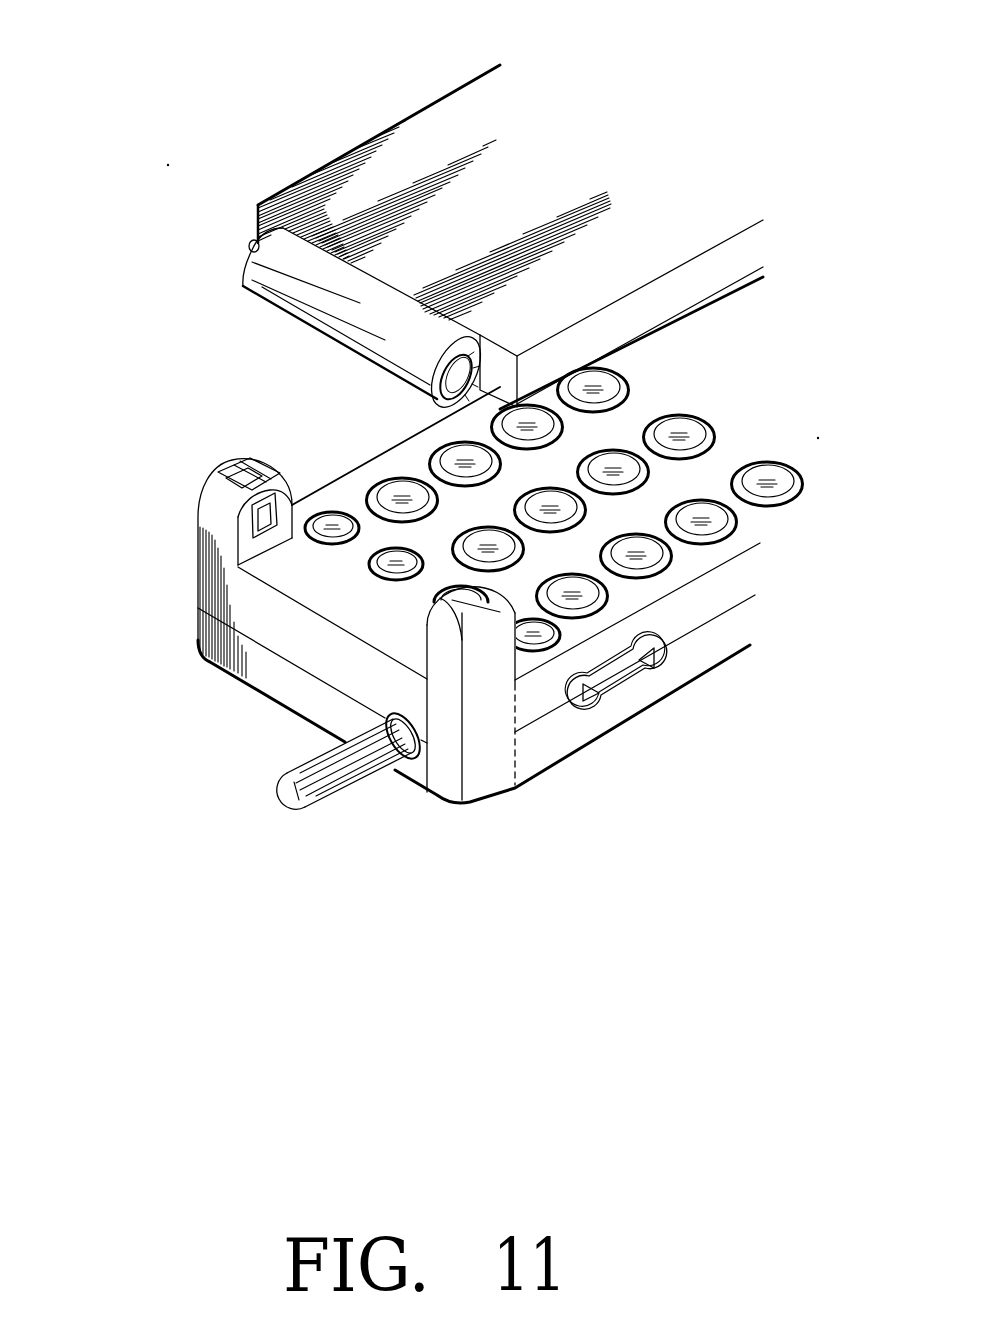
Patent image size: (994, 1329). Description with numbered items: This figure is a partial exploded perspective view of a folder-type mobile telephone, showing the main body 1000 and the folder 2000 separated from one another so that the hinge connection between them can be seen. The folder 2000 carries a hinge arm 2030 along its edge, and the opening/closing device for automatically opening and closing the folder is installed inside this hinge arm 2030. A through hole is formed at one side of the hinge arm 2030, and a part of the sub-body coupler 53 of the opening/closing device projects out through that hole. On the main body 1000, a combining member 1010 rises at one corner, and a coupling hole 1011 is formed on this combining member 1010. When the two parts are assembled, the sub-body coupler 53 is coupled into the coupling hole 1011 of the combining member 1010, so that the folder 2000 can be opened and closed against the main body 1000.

The folder 2000 is at (447, 234).
The sub-body coupler 53 is at (252, 246).
The hinge arm 2030 is at (276, 300).
The coupling hole 1011 is at (258, 461).
The combining member 1010 is at (183, 540).
The main body 1000 is at (439, 647).